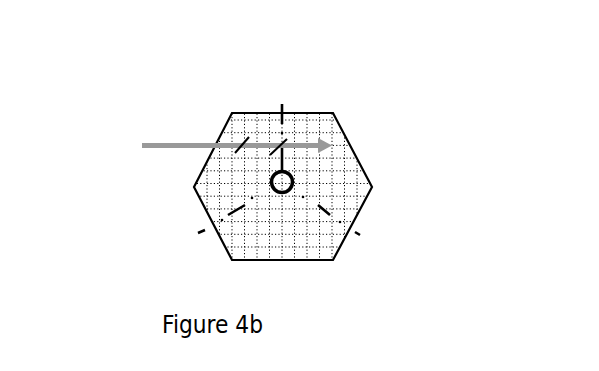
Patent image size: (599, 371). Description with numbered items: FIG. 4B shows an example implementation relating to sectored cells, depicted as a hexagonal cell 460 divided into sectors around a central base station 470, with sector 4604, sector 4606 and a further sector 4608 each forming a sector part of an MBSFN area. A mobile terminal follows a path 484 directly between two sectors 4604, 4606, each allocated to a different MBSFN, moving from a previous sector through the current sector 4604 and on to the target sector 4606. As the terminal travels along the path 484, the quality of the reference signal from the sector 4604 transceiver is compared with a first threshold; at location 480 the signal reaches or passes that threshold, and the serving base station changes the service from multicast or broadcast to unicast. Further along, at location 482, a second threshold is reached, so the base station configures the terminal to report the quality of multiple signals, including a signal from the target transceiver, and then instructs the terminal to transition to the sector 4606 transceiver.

The cell 460 is at (205, 231).
The base station 470 is at (293, 181).
The location 480 is at (247, 152).
The location 482 is at (282, 146).
The path 484 is at (178, 146).
The sector 4604 is at (212, 185).
The sector 4606 is at (320, 128).
The sector part of MBSFN area 2 4608 is at (313, 243).